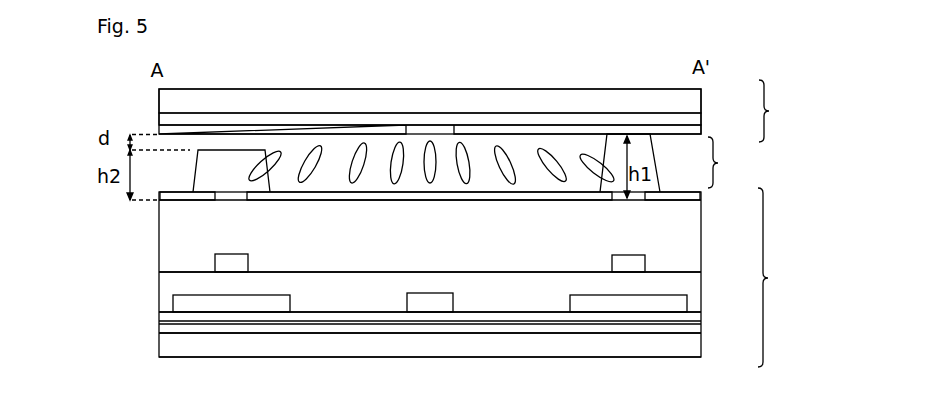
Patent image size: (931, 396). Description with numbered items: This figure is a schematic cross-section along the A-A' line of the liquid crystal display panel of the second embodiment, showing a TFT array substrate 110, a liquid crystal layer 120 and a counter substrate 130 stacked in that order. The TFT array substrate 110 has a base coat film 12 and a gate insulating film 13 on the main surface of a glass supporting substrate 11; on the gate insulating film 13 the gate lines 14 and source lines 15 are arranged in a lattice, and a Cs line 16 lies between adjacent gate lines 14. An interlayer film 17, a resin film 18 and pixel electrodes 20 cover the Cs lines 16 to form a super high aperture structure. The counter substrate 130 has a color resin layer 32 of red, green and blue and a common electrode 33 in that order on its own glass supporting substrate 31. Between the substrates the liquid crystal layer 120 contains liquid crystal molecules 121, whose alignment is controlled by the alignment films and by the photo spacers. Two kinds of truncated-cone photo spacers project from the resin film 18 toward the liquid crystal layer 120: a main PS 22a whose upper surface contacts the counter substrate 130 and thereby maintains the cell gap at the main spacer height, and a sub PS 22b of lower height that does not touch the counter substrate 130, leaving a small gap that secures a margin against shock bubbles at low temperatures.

The supporting substrate 11 is at (698, 345).
The base coat film 12 is at (698, 327).
The gate insulating film 13 is at (698, 317).
The gate line 14 is at (422, 305).
The source line 15 is at (220, 262).
The Cs line 16 is at (222, 305).
The interlayer film 17 is at (698, 280).
The resin film 18 is at (698, 230).
The pixel electrode 20 is at (702, 193).
The main PS 22a is at (621, 192).
The sub PS 22b is at (235, 183).
The supporting substrate 31 is at (697, 99).
The color resin layer 32 is at (697, 120).
The common electrode 33 is at (697, 127).
The TFT array substrate 110 is at (485, 277).
The liquid crystal layer 120 is at (736, 162).
The liquid crystal molecule 121 is at (506, 170).
The counter substrate 130 is at (485, 111).